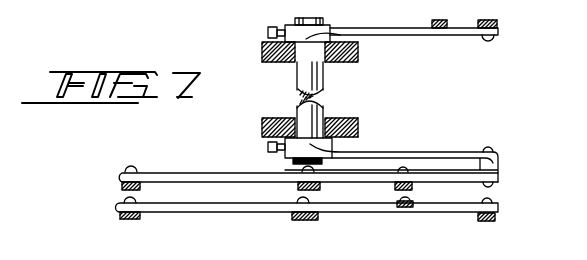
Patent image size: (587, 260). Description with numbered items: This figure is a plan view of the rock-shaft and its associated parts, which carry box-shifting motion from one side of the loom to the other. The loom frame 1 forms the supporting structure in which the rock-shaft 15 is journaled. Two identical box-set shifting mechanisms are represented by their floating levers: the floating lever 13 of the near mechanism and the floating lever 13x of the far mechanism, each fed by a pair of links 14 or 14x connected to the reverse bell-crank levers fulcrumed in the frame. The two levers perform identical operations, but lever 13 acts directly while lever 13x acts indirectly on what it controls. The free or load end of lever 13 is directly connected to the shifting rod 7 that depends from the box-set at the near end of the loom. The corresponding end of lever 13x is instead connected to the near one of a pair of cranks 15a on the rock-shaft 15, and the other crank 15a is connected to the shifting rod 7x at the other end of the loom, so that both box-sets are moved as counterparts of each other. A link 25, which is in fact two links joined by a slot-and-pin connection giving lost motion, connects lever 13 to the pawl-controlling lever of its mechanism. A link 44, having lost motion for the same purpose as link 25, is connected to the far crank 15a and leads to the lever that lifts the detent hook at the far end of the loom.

The frame 1 is at (262, 62).
The shifting rod 7 is at (497, 218).
The shifting rod 7x is at (498, 30).
The floating lever 13 is at (442, 189).
The floating lever 13x is at (501, 178).
The link 14 is at (290, 213).
The link 14x is at (298, 184).
The rock-shaft 15 is at (322, 90).
The crank 15a is at (417, 36).
The link 25 is at (398, 205).
The link 44 is at (432, 22).